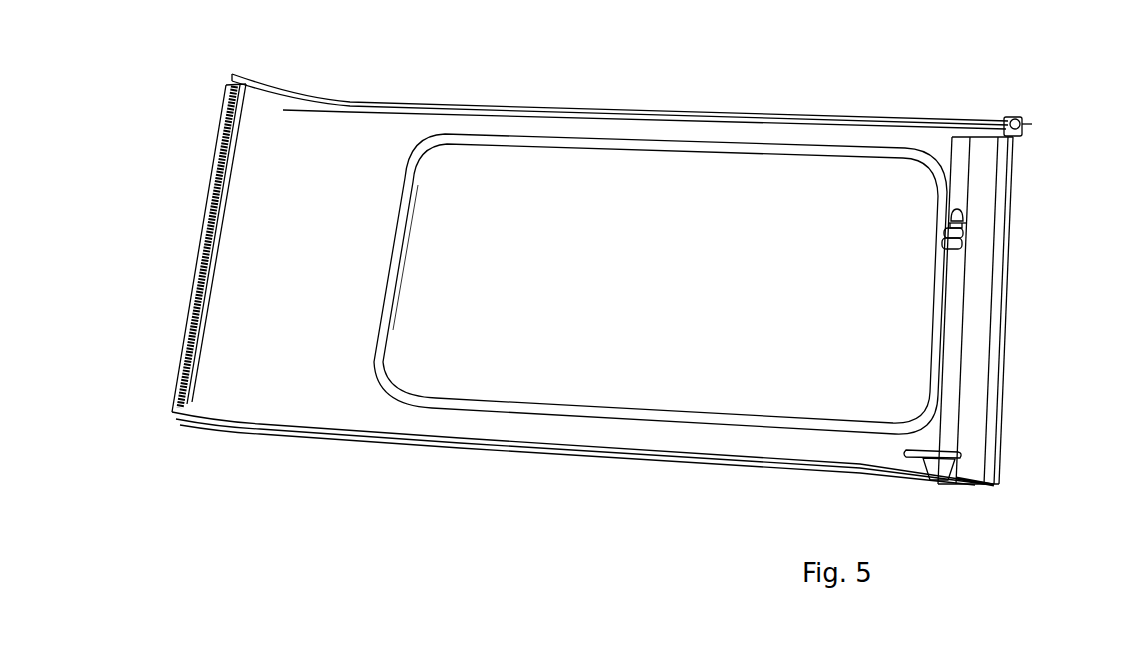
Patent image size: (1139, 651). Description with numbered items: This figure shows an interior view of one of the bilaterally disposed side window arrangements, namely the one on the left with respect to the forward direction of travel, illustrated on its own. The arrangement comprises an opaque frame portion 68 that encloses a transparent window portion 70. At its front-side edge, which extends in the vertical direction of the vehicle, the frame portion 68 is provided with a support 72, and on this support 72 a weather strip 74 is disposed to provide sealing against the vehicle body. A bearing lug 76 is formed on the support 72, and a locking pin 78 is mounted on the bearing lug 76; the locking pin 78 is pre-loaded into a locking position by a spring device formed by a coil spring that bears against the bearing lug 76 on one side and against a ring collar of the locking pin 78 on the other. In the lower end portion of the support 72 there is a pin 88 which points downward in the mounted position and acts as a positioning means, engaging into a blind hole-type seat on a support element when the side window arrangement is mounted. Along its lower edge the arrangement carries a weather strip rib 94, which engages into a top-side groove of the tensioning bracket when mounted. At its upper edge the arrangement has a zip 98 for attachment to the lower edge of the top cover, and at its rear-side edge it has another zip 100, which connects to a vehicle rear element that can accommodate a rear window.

The frame portion 68 is at (562, 121).
The zip 98 is at (812, 119).
The support 72 is at (958, 162).
The weather strip 74 is at (1003, 290).
The bearing lug 76 is at (964, 233).
The locking pin 78 is at (948, 248).
The window portion 70 is at (660, 284).
The zip 100 is at (193, 283).
The weather strip rib 94 is at (573, 455).
The pin 88 is at (932, 463).